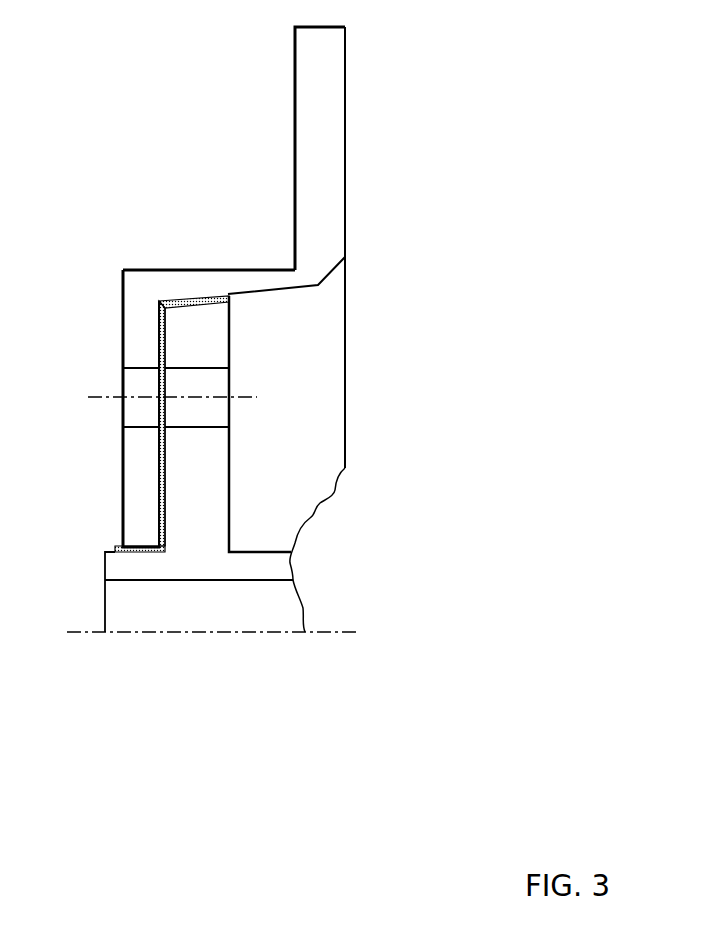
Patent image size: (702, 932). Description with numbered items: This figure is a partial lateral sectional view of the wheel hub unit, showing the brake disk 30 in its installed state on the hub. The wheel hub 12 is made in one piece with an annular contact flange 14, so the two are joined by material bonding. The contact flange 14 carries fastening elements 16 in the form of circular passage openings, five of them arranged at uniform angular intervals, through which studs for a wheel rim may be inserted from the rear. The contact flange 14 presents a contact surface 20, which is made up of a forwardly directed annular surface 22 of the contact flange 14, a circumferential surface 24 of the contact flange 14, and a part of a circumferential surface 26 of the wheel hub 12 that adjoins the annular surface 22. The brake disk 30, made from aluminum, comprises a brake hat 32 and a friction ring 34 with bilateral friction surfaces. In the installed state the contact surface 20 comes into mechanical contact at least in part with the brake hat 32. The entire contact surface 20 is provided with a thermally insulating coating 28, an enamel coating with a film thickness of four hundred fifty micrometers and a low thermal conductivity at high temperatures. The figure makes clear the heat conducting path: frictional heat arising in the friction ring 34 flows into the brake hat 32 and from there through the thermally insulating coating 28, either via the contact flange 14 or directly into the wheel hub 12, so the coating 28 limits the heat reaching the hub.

The wheel hub 12 is at (117, 568).
The annular contact flange 14 is at (217, 505).
The fastening elements 16 is at (222, 412).
The contact surface 20 is at (150, 356).
The forwardly directed annular surface 22 is at (160, 503).
The circumferential surface of the contact flange 24 is at (203, 297).
The circumferential surface of the wheel hub 26 is at (142, 545).
The thermally insulating coating 28 is at (163, 482).
The brake disk 30 is at (120, 285).
The brake hat 32 is at (182, 279).
The friction ring 34 is at (332, 140).